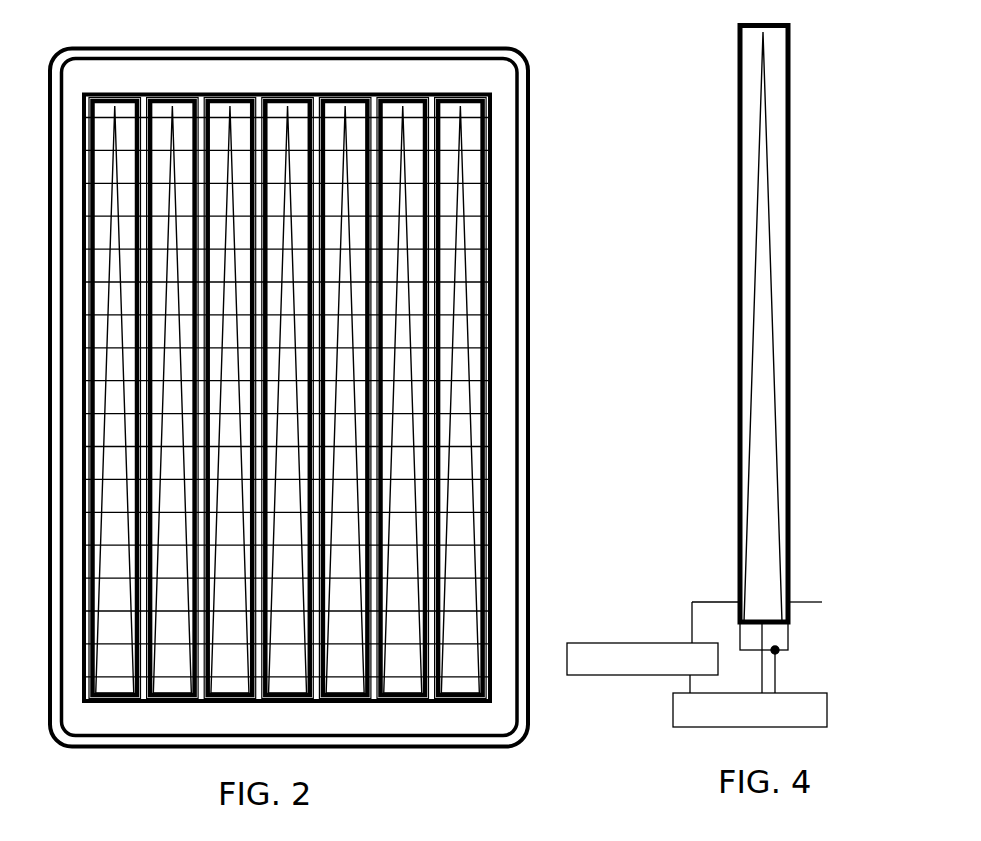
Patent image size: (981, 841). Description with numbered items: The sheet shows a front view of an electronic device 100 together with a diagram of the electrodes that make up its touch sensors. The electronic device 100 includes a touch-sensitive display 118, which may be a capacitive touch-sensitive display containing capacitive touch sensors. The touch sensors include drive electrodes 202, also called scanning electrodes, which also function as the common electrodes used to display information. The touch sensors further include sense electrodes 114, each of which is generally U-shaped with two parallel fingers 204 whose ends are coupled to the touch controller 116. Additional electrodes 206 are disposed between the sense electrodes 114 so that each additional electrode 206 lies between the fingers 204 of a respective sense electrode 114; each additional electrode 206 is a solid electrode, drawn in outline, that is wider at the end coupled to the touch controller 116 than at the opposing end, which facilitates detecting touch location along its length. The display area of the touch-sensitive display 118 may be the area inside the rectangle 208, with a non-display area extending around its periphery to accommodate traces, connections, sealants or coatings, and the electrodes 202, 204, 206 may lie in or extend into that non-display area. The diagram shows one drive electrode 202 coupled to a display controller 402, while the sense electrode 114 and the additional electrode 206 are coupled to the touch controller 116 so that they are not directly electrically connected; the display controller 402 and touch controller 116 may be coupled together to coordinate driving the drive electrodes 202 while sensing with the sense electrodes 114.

In FIG. 2, the electronic device 100 is at (539, 781).
In FIG. 2, the sense electrode 114 is at (490, 94).
In FIG. 4, the sense electrode 114 is at (737, 523).
In FIG. 4, the touch controller 116 is at (702, 728).
In FIG. 2, the touch-sensitive display 118 is at (518, 328).
In FIG. 2, the drive electrode 202 is at (222, 118).
In FIG. 4, the drive electrode 202 is at (705, 601).
In FIG. 2, the parallel fingers 204 is at (442, 162).
In FIG. 2, the additional electrode 206 is at (463, 240).
In FIG. 4, the additional electrode 206 is at (778, 622).
In FIG. 2, the rectangle 208 is at (493, 439).
In FIG. 4, the display controller 402 is at (645, 678).